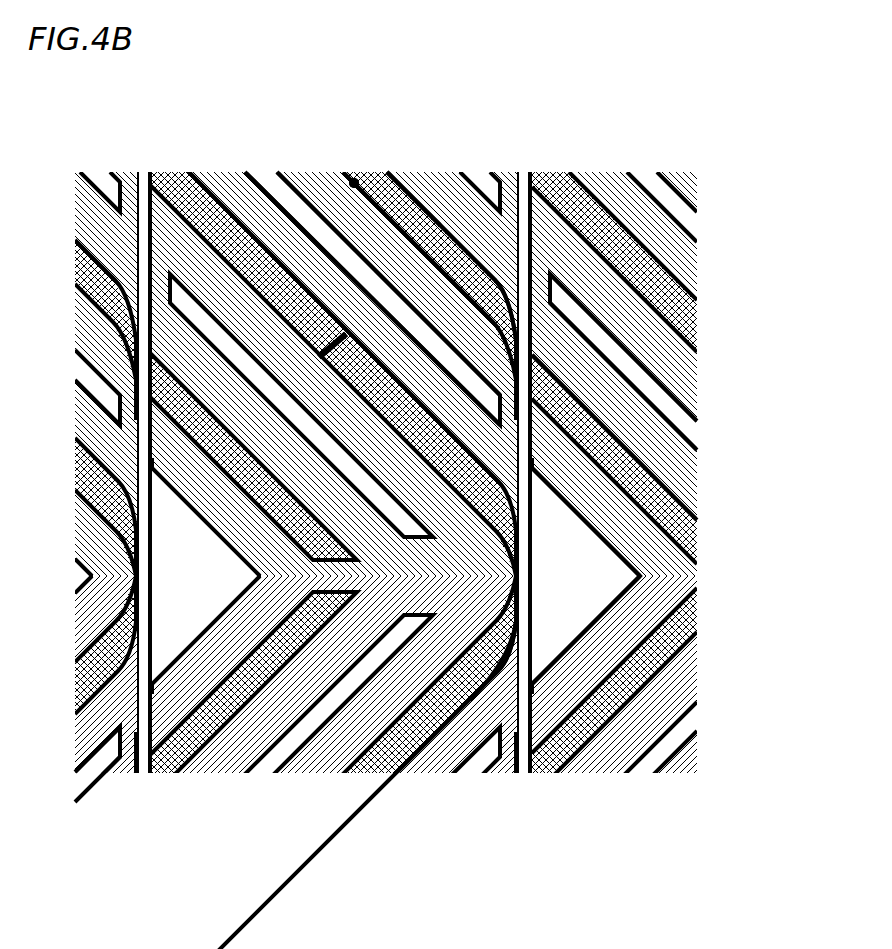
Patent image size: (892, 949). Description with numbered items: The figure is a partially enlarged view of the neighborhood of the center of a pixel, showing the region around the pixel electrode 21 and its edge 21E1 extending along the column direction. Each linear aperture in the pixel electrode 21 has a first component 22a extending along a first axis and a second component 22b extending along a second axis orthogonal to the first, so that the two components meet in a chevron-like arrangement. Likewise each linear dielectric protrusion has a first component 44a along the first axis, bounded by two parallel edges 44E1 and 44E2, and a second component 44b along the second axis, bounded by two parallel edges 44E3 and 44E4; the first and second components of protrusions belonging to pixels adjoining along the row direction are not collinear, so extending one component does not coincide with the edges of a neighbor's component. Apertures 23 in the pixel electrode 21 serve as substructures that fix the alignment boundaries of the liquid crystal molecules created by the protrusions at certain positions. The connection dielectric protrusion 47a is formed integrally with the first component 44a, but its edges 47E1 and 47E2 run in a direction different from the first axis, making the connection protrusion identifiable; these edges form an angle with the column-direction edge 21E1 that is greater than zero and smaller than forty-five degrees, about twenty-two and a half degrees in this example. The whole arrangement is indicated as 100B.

The pixel electrode 21 is at (231, 196).
The first component of linear aperture 22a is at (300, 212).
The second component of linear aperture 22b is at (130, 742).
The aperture 23 is at (320, 346).
The first component of linear dielectric protrusion 44a is at (376, 238).
The second component of linear dielectric protrusion 44b is at (407, 768).
The edge of first component 44E1 is at (354, 178).
The edge of first component 44E2 is at (456, 196).
The edge of second component 44E3 is at (380, 738).
The edge of second component 44E4 is at (462, 726).
The connection dielectric protrusion 47a is at (520, 205).
The edge of connection dielectric protrusion 47E1 is at (552, 388).
The edge of connection dielectric protrusion 47E2 is at (552, 336).
The edge of pixel electrode 21E1 is at (535, 571).
The display device 100B is at (705, 129).